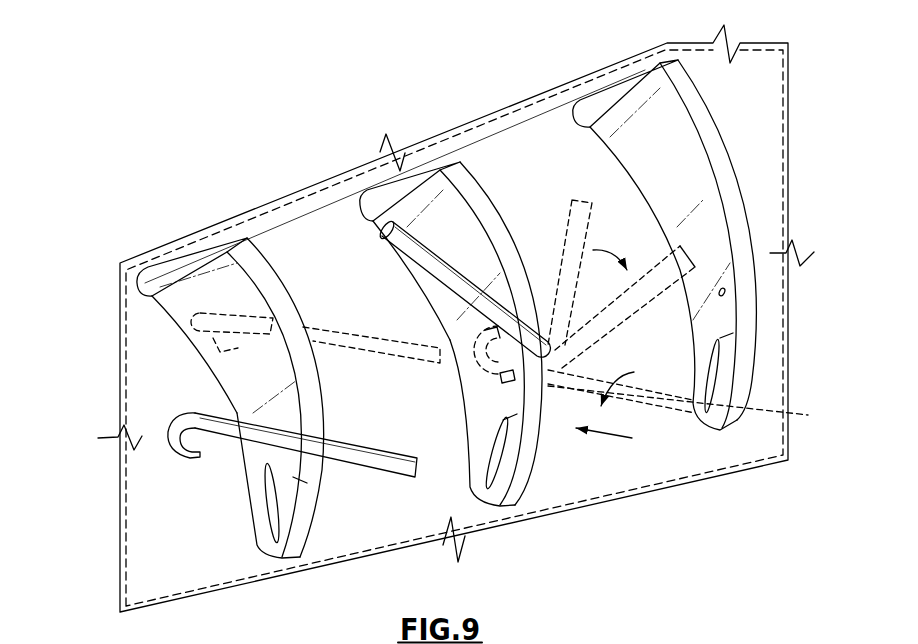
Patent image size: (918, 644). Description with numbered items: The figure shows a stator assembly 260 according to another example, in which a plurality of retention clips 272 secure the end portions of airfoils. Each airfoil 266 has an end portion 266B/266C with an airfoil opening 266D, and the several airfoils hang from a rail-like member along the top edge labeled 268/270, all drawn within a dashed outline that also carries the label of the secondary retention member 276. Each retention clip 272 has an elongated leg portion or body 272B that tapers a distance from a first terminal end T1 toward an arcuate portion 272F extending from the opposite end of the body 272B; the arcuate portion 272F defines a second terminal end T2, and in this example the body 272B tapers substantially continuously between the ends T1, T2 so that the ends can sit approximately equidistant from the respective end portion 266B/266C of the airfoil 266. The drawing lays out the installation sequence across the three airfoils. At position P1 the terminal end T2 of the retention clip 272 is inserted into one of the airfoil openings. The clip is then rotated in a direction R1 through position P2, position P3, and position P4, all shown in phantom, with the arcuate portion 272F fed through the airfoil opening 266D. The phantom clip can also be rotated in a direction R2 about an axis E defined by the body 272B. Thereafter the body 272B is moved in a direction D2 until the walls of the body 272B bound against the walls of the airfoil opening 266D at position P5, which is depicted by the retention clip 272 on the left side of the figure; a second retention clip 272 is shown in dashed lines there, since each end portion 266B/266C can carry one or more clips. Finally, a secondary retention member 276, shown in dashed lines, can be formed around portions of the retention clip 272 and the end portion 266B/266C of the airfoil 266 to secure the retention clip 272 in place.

The stator assembly 260 is at (123, 122).
The airfoil 266 is at (380, 213).
The end portion 266B is at (339, 309).
The end portion 266C is at (210, 257).
The airfoil opening 266D is at (258, 516).
The rail 268 is at (431, 144).
The rail member 270 is at (592, 100).
The retention clip 272 is at (187, 315).
The body 272B is at (352, 438).
The arcuate portion 272F is at (161, 451).
The secondary retention member 276 is at (125, 557).
The position P1 is at (446, 254).
The position P2 is at (588, 190).
The position P3 is at (699, 249).
The position P4 is at (684, 416).
The position P5 is at (385, 474).
The first terminal end T1 is at (418, 463).
The second terminal end T2 is at (200, 457).
The direction R1 is at (617, 245).
The direction R2 is at (621, 370).
The direction D2 is at (605, 440).
The axis E is at (790, 413).